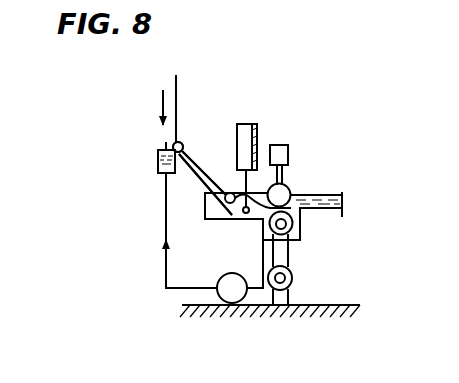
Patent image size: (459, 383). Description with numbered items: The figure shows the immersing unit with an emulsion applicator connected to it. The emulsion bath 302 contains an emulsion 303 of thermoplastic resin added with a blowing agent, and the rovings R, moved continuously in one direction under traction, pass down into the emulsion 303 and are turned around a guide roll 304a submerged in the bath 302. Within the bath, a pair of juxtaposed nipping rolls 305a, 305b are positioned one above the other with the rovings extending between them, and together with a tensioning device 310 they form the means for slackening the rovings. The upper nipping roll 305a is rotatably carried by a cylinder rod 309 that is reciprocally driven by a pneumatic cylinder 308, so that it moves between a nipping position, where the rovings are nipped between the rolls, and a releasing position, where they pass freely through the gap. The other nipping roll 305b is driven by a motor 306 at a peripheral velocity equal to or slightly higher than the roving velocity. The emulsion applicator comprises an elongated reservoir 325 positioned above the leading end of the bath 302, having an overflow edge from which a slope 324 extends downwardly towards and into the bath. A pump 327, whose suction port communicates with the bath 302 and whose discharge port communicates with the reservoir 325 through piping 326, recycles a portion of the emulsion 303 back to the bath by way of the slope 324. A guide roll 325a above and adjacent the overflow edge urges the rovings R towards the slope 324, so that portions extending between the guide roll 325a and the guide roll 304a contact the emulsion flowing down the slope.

The rovings R is at (177, 88).
The emulsion bath 302 is at (213, 221).
The emulsion 303 is at (346, 203).
The guide roll 304a is at (229, 192).
The nipping roll 305a is at (282, 193).
The nipping roll 305b is at (287, 222).
The motor 306 is at (292, 277).
The pneumatic cylinder 308 is at (281, 145).
The cylinder rod 309 is at (283, 172).
The tensioning device 310 is at (252, 118).
The slope 324 is at (190, 165).
The reservoir 325 is at (157, 154).
The guide roll 325a is at (174, 143).
The piping 326 is at (168, 294).
The pump 327 is at (232, 303).